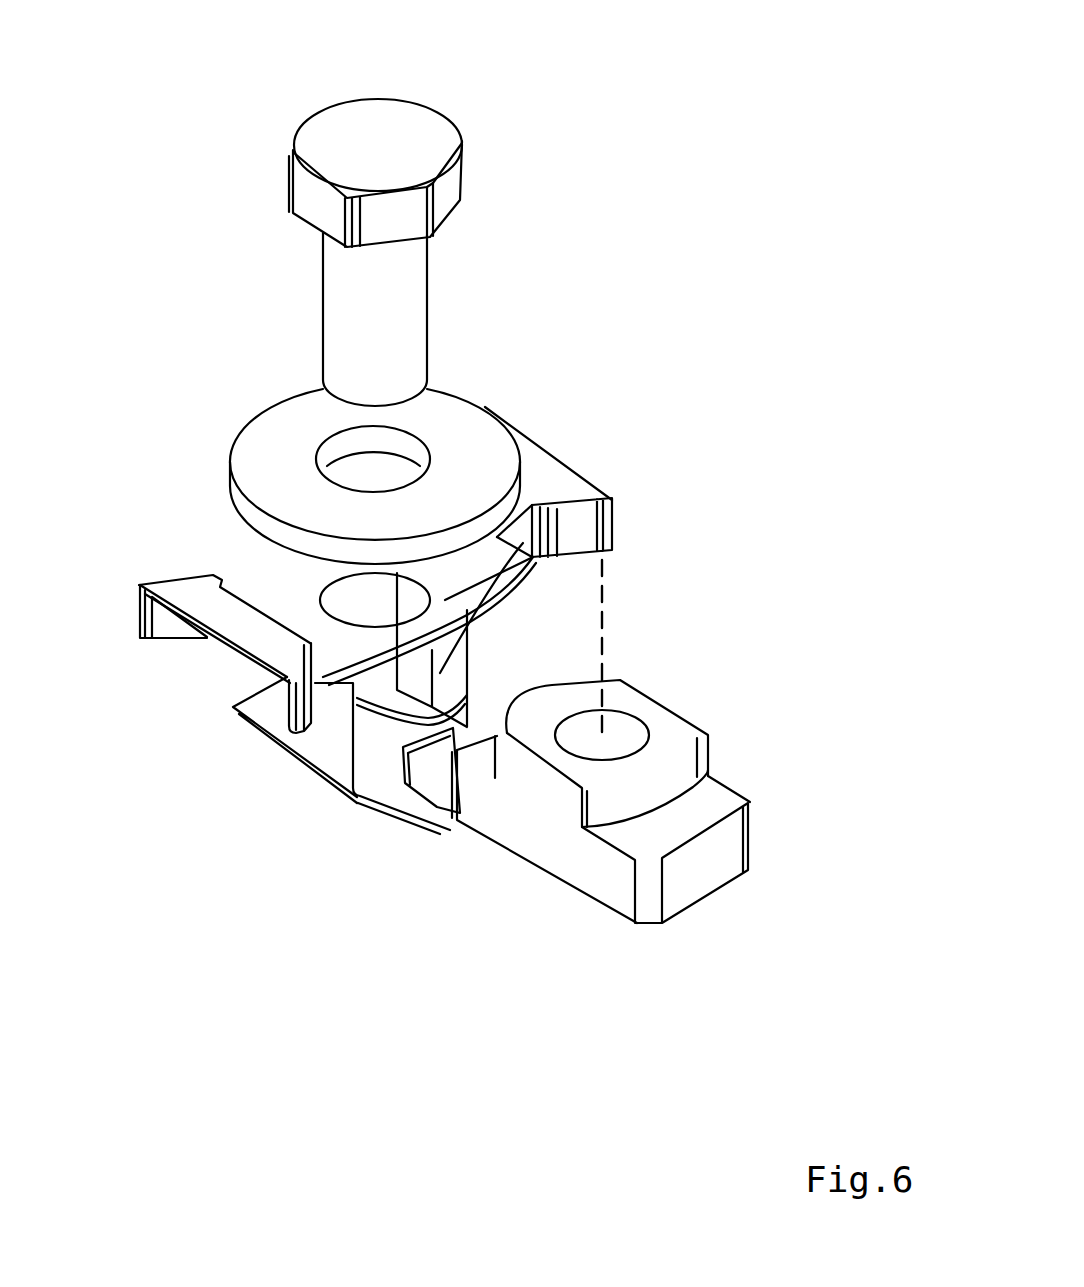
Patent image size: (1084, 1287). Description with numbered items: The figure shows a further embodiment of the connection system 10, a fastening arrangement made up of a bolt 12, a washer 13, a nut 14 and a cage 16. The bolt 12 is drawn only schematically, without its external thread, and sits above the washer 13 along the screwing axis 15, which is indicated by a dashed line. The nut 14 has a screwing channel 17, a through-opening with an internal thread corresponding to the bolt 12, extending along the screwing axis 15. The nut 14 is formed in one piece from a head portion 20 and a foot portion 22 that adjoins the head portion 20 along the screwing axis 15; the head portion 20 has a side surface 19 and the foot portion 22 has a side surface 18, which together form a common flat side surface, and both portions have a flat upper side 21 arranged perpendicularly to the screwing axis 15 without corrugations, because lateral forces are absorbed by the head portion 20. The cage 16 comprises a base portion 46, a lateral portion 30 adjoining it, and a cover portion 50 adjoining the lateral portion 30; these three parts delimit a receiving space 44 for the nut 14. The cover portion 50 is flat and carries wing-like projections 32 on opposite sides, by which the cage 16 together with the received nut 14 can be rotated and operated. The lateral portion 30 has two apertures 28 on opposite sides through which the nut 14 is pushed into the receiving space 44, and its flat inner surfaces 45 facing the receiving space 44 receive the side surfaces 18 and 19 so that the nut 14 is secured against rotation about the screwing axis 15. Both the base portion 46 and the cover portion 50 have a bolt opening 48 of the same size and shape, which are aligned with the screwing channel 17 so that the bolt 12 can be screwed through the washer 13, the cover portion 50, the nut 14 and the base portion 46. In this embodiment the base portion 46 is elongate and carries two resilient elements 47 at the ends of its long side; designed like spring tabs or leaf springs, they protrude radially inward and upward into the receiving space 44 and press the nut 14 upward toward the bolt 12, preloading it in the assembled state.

The connection system 10 is at (725, 143).
The bolt 12 is at (357, 347).
The washer 13 is at (408, 522).
The nut 14 is at (672, 738).
The screwing axis 15 is at (605, 633).
The cage 16 is at (357, 676).
The screwing channel 17 is at (630, 737).
The side surface of the foot portion 18 is at (528, 840).
The side surface of the head portion 19 is at (542, 797).
The head portion 20 is at (657, 803).
The upper side 21 is at (655, 760).
The foot portion 22 is at (700, 880).
The aperture 28 is at (618, 537).
The lateral portion 30 is at (300, 750).
The projection 32 is at (542, 477).
The receiving space 44 is at (390, 752).
The inner surface 45 is at (447, 690).
The base portion 46 is at (370, 782).
The resilient element 47 is at (262, 698).
The bolt opening 48 is at (345, 603).
The cover portion 50 is at (290, 592).